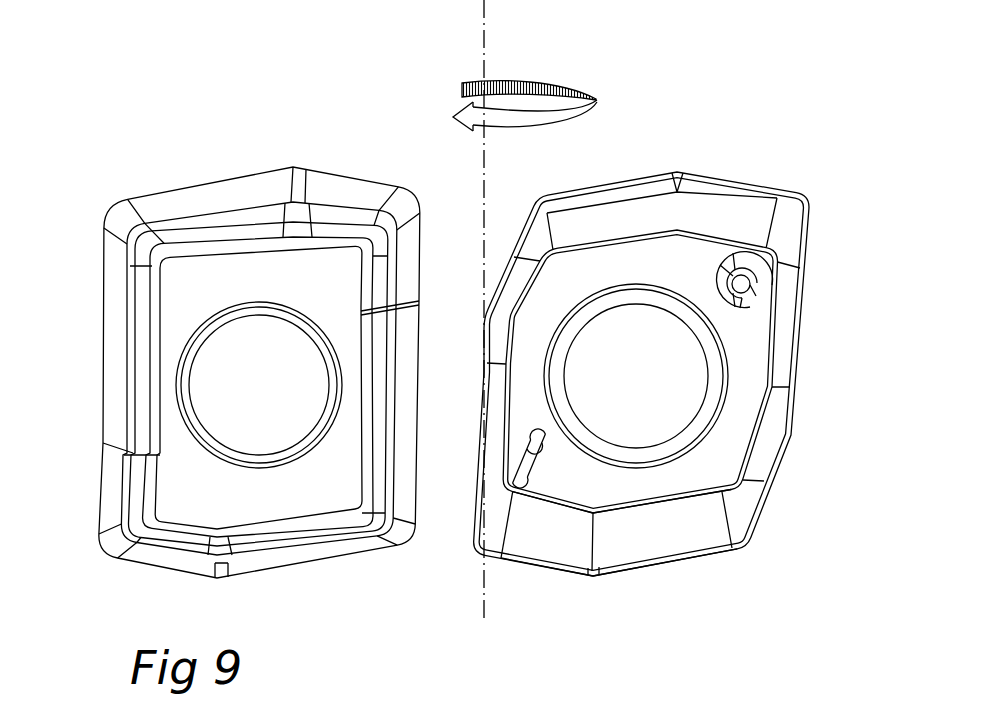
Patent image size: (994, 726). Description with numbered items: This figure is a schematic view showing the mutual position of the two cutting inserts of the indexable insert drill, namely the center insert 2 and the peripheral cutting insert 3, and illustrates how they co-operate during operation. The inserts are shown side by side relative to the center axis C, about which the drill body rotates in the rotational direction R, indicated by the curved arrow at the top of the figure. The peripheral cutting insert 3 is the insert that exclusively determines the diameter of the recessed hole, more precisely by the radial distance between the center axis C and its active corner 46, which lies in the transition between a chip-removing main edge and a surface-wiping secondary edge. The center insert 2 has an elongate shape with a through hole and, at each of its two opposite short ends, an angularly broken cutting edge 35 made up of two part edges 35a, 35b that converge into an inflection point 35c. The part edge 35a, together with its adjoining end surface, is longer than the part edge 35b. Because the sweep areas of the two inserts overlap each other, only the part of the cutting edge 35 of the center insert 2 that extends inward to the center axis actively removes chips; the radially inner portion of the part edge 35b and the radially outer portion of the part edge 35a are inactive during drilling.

The center insert 2 is at (660, 396).
The peripheral cutting insert 3 is at (244, 355).
The cutting edge 35 is at (632, 590).
The part edge 35a is at (673, 569).
The part edge 35b is at (533, 566).
The inflection point 35c is at (600, 578).
The active corner 46 is at (105, 548).
The center axis C is at (482, 587).
The rotational direction R is at (525, 90).